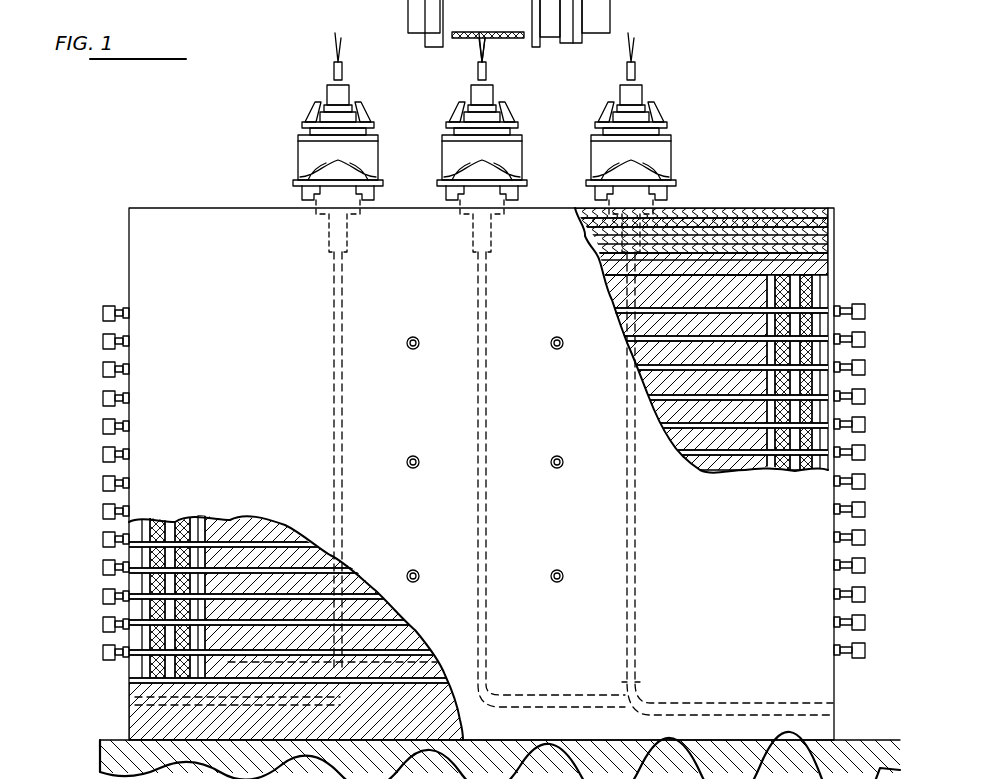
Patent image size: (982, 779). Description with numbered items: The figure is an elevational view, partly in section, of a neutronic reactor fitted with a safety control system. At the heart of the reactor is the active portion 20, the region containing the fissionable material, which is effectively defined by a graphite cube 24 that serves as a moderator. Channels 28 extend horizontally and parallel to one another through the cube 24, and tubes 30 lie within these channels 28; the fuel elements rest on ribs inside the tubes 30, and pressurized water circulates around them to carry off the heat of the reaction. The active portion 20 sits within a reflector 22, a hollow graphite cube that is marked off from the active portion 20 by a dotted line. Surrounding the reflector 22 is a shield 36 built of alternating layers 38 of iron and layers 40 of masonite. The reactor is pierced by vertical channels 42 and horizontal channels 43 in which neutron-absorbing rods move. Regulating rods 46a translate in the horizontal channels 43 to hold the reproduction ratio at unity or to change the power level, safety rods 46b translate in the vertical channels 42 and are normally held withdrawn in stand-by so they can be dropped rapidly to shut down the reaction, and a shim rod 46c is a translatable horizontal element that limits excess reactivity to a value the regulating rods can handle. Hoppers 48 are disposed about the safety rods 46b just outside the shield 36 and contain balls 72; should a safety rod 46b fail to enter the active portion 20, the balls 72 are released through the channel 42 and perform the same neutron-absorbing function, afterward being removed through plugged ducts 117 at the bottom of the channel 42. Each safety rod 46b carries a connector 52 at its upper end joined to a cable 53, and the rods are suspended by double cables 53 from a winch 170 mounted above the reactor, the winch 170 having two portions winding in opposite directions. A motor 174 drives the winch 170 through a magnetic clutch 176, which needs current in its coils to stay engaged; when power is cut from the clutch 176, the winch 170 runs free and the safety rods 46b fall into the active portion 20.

The active portion 20 is at (243, 548).
The reflector 22 is at (600, 292).
The cube 24 is at (640, 318).
The channels 28 is at (263, 596).
The tubes 30 is at (214, 546).
The shield 36 is at (775, 216).
The layers 38 is at (828, 270).
The layers 40 is at (828, 258).
The vertical channels 42 is at (338, 303).
The horizontal channels 43 is at (413, 462).
The rods 46a is at (413, 462).
The rods 46b is at (340, 366).
The horizontal rod 46c is at (413, 343).
The hoppers 48 is at (306, 156).
The connector 52 is at (350, 98).
The cable 53 is at (336, 44).
The balls 72 is at (500, 755).
The plugged ducts 117 is at (136, 718).
The winch 170 is at (497, 38).
The motor 174 is at (612, 22).
The magnetic clutch 176 is at (572, 44).